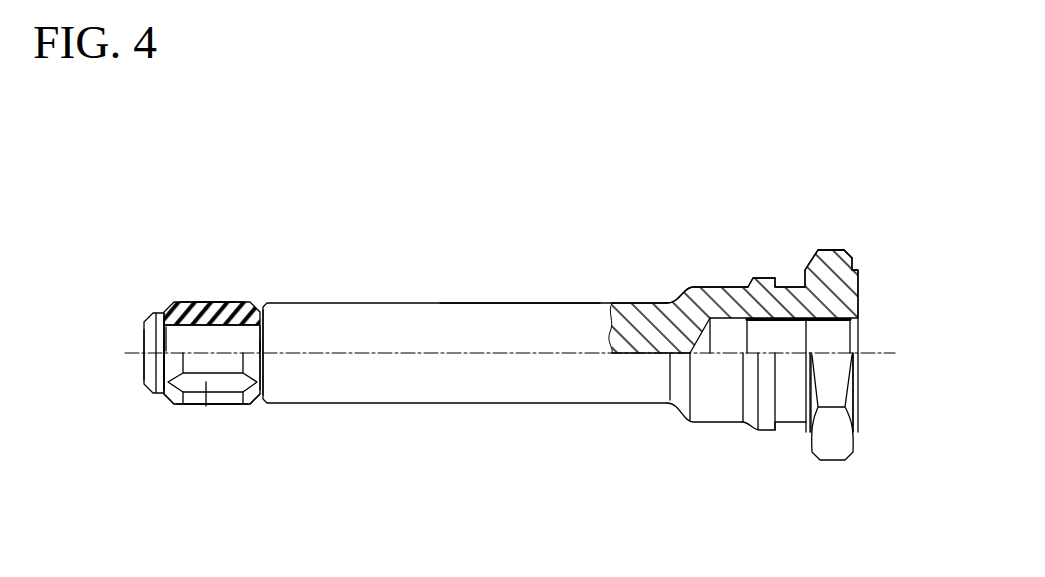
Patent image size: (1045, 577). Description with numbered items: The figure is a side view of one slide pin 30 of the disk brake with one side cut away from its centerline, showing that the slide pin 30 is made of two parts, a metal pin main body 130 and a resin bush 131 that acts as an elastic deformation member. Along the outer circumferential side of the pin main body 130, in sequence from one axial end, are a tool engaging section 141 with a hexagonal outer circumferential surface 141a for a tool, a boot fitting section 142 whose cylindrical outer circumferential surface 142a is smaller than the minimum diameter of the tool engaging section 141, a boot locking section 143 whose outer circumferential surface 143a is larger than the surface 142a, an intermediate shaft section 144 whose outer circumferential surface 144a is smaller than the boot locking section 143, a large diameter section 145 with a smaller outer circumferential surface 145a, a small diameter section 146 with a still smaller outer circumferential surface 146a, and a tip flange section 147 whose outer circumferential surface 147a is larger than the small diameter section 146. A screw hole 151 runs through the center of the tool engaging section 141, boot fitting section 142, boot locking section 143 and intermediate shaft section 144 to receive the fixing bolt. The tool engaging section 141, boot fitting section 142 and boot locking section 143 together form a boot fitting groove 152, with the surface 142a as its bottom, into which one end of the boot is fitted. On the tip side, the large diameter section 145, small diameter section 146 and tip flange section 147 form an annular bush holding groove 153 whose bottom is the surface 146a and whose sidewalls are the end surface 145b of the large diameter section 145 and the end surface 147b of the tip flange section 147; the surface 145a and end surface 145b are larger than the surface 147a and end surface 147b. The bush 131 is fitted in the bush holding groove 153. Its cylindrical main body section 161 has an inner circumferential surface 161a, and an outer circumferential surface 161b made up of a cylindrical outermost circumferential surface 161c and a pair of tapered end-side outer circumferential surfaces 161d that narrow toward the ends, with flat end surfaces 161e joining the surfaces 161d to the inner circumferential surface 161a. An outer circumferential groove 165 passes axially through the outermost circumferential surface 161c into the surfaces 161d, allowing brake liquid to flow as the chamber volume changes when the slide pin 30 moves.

The slide pin 30 is at (882, 184).
The pin main body 130 is at (420, 296).
The bush 131 is at (223, 406).
The tool engaging section 141 is at (833, 447).
The hexagonal outer circumferential surface 141a is at (833, 250).
The boot fitting section 142 is at (792, 410).
The outer circumferential surface of the boot fitting section 142a is at (792, 286).
The boot locking section 143 is at (763, 422).
The outer circumferential surface of the boot locking section 143a is at (765, 277).
The intermediate shaft section 144 is at (717, 412).
The outer circumferential surface of the intermediate shaft section 144a is at (717, 286).
The large diameter section 145 is at (517, 404).
The outer circumferential surface of the large diameter section 145a is at (527, 303).
The end surface of the large diameter section 145b is at (242, 307).
The small diameter section 146 is at (240, 337).
The outer circumferential surface of the small diameter section 146a is at (205, 306).
The tip flange section 147 is at (158, 393).
The outer circumferential surface of the tip flange section 147a is at (162, 312).
The end surface of the tip flange section 147b is at (170, 307).
The screw hole 151 is at (807, 320).
The boot fitting groove 152 is at (793, 382).
The bush holding groove 153 is at (185, 341).
The main body section 161 is at (238, 406).
The inner circumferential surface 161a is at (267, 343).
The outer circumferential surface of the main body section 161b is at (207, 303).
The outermost circumferential surface 161c is at (192, 406).
The end-side outer circumferential surfaces 161d is at (175, 406).
The end surfaces 161e is at (164, 373).
The outer circumferential groove 165 is at (206, 406).